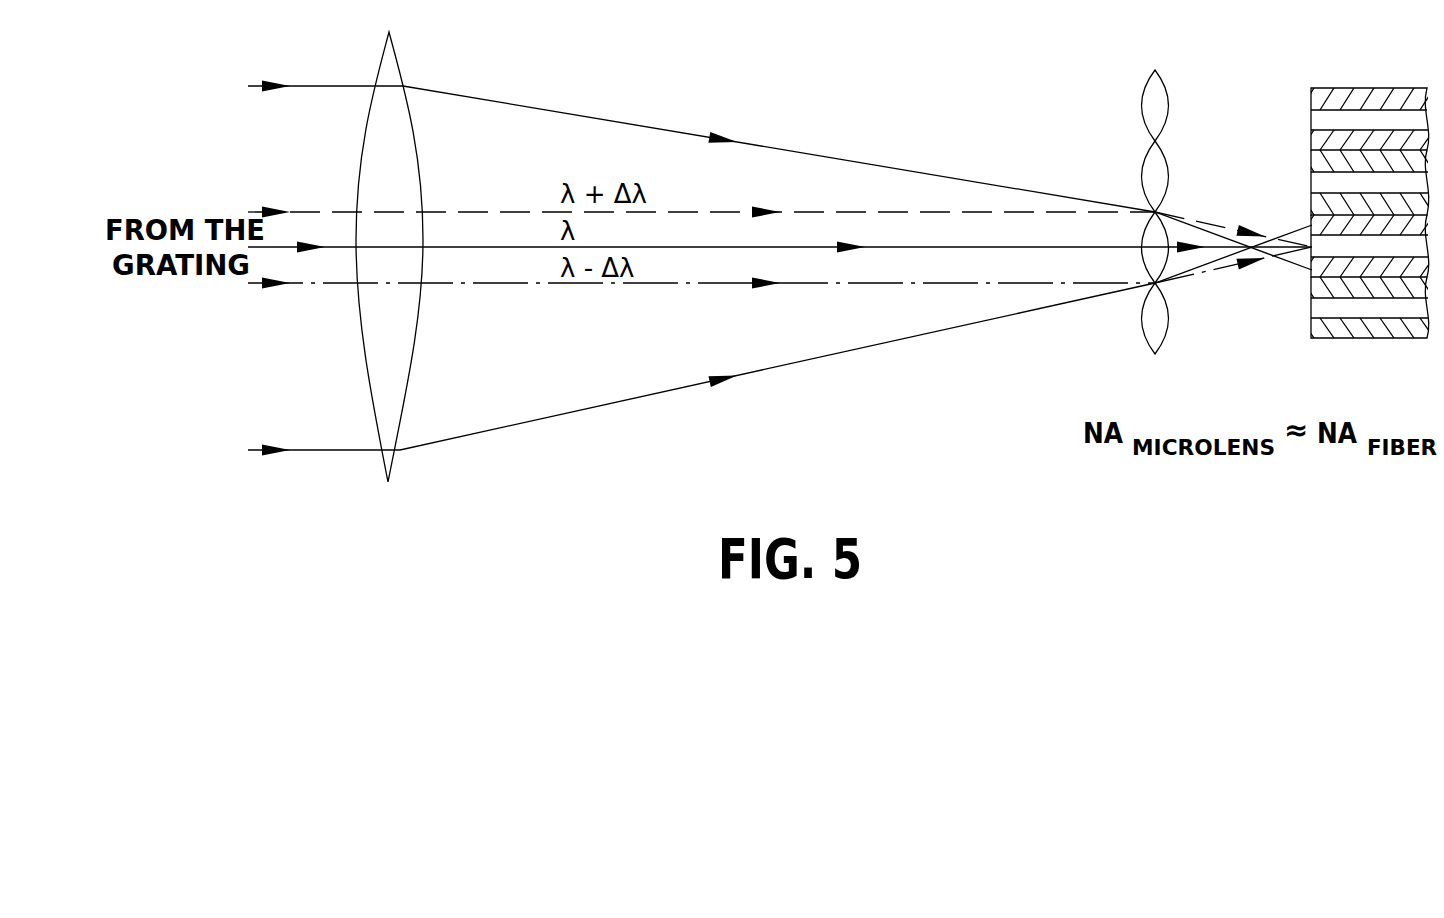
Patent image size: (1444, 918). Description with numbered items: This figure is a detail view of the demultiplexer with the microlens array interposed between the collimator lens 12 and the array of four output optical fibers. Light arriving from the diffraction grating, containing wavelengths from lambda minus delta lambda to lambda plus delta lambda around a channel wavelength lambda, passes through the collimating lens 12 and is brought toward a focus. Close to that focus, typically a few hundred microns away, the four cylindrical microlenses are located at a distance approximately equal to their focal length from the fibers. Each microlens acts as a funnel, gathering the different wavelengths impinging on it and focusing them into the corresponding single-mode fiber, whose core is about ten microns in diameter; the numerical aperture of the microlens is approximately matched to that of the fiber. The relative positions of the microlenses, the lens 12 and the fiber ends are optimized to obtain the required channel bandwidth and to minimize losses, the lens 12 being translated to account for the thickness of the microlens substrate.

The collimator lens 12 is at (389, 283).